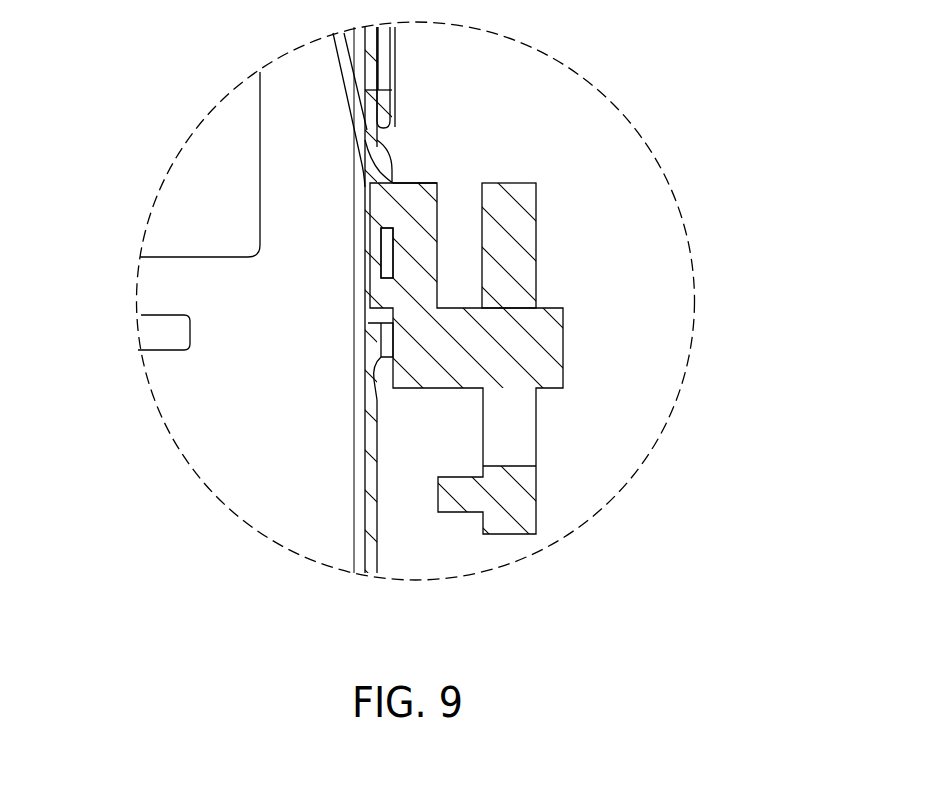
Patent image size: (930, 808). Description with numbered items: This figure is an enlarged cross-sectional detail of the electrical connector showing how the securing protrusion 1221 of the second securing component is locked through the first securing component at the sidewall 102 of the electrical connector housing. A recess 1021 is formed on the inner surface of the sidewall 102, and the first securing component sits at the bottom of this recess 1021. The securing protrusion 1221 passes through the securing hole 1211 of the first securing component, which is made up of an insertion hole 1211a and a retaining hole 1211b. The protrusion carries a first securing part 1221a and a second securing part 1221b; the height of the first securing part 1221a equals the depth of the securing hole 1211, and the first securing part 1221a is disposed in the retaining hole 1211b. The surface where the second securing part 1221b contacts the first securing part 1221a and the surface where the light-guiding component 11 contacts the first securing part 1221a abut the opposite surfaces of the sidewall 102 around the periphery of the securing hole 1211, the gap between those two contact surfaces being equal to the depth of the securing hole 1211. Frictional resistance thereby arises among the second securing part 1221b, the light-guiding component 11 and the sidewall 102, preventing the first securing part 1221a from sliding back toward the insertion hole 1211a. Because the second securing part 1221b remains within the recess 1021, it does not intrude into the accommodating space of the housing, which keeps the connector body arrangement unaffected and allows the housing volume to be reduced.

The light-guiding component 11 is at (536, 425).
The sidewall 102 is at (378, 141).
The recess 1021 is at (388, 370).
The securing hole 1211 is at (373, 248).
The insertion hole 1211a is at (395, 253).
The retaining hole 1211b is at (390, 178).
The securing protrusion 1221 is at (360, 210).
The first securing part 1221a is at (397, 181).
The second securing part 1221b is at (363, 187).